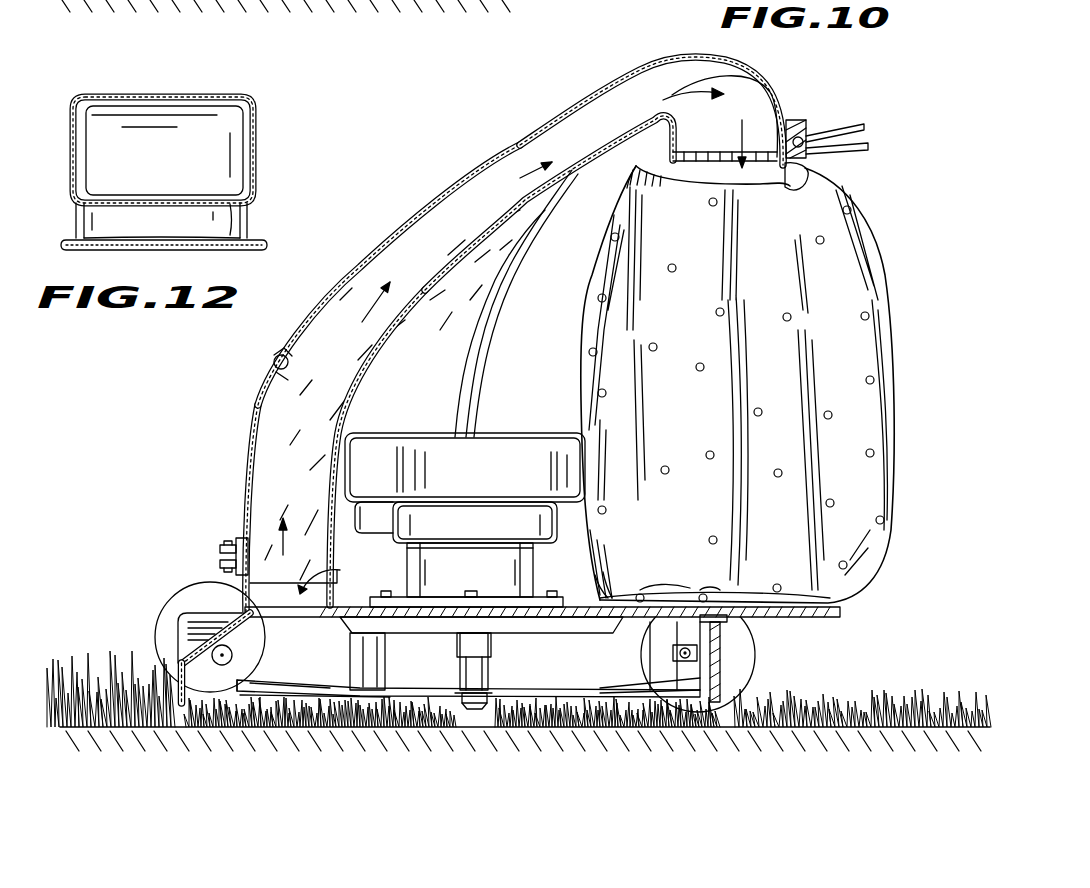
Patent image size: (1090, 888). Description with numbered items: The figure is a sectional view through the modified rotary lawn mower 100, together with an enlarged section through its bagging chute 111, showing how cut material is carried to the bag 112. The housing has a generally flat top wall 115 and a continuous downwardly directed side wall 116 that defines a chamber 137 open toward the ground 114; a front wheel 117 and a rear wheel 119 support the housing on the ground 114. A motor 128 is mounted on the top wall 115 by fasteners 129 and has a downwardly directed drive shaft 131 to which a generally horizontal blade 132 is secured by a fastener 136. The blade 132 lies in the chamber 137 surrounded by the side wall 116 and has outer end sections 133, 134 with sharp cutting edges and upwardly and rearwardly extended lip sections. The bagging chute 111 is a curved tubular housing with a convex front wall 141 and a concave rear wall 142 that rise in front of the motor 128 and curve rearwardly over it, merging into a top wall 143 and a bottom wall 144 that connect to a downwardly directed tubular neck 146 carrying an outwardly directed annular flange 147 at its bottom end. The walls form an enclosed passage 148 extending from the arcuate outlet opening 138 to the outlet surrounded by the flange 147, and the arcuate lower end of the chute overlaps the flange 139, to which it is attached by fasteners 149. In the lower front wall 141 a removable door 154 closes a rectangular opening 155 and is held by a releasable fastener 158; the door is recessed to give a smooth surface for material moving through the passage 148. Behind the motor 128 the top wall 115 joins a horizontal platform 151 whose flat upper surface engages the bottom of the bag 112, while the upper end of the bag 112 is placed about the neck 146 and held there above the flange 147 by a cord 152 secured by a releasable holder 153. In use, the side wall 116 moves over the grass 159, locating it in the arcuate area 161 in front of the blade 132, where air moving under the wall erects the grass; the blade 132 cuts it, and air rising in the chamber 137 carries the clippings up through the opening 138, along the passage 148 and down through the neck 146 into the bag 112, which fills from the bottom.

In FIG. 10, the rotary lawn mower 100 is at (212, 397).
In FIG. 10, the bagging chute 111 is at (436, 190).
In FIG. 10, the bag 112 is at (868, 305).
In FIG. 10, the ground 114 is at (890, 697).
In FIG. 10, the top wall 115 is at (612, 582).
In FIG. 10, the side wall 116 is at (700, 690).
In FIG. 10, the front wheel 117 is at (185, 606).
In FIG. 10, the rear wheel 119 is at (745, 640).
In FIG. 10, the motor 128 is at (525, 452).
In FIG. 10, the fasteners 129 is at (472, 594).
In FIG. 10, the drive shaft 131 is at (482, 670).
In FIG. 10, the blade 132 is at (404, 690).
In FIG. 10, the outer end section 133 is at (282, 682).
In FIG. 10, the outer end section 134 is at (665, 730).
In FIG. 10, the fastener 136 is at (475, 720).
In FIG. 10, the chamber 137 is at (598, 728).
In FIG. 10, the outlet opening 138 is at (325, 563).
In FIG. 10, the flange 139 is at (343, 585).
In FIG. 10, the front wall 141 is at (357, 266).
In FIG. 10, the rear wall 142 is at (360, 393).
In FIG. 10, the top wall 143 is at (675, 78).
In FIG. 12, the top wall 143 is at (207, 97).
In FIG. 10, the bottom wall 144 is at (600, 160).
In FIG. 12, the bottom wall 144 is at (183, 203).
In FIG. 10, the neck 146 is at (783, 92).
In FIG. 12, the neck 146 is at (240, 204).
In FIG. 10, the annular flange 147 is at (786, 175).
In FIG. 12, the annular flange 147 is at (252, 240).
In FIG. 10, the passage 148 is at (488, 180).
In FIG. 12, the passage 148 is at (122, 117).
In FIG. 10, the fasteners 149 is at (245, 586).
In FIG. 10, the platform 151 is at (832, 609).
In FIG. 10, the cord 152 is at (866, 126).
In FIG. 10, the holder 153 is at (802, 138).
In FIG. 10, the door 154 is at (243, 470).
In FIG. 10, the opening 155 is at (283, 378).
In FIG. 10, the releasable fastener 158 is at (232, 540).
In FIG. 10, the grass 159 is at (90, 652).
In FIG. 10, the arcuate area 161 is at (181, 730).